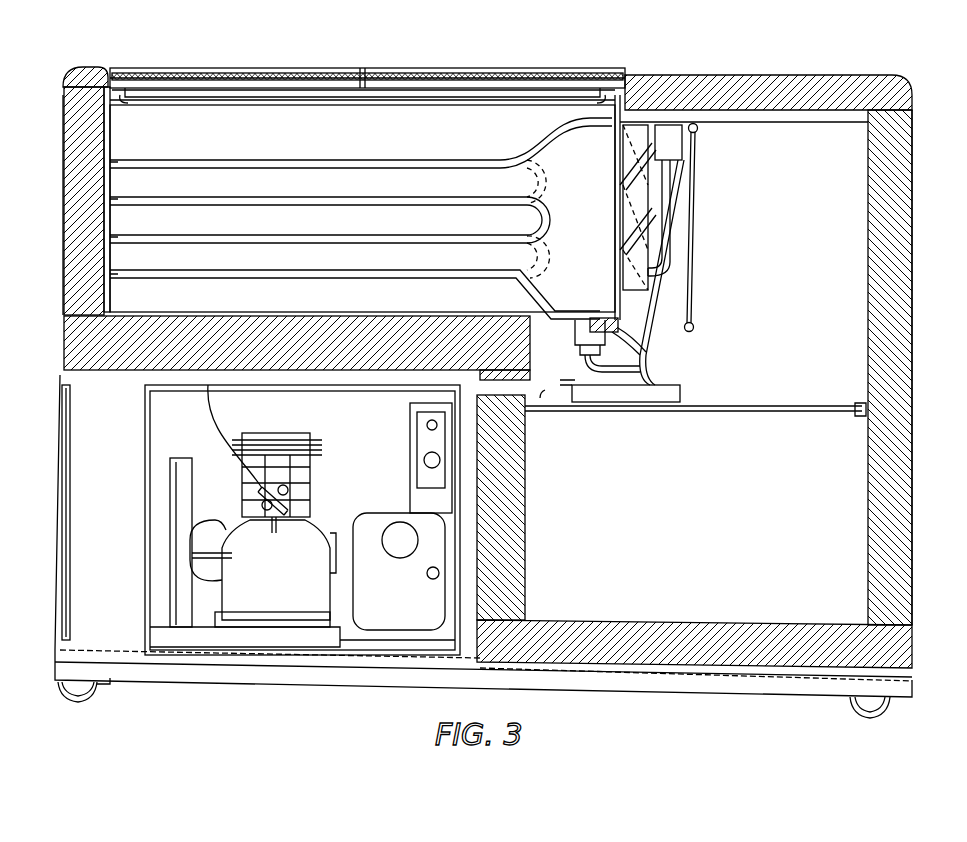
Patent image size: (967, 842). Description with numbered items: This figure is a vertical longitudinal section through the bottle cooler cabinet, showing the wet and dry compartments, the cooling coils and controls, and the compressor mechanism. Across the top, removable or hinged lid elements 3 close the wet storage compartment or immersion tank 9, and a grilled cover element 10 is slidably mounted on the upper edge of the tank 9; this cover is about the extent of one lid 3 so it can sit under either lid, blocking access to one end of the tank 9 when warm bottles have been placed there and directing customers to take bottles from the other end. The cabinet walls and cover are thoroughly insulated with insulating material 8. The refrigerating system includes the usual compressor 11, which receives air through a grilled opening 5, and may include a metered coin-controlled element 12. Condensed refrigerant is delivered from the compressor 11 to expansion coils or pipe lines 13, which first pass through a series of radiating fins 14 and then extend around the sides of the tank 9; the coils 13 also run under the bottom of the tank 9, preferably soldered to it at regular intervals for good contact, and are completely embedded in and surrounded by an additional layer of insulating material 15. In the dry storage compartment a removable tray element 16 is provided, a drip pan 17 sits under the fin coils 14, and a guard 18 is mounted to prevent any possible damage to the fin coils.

The lid elements 3 is at (445, 72).
The grilled opening 5 is at (68, 505).
The insulating material 8 is at (80, 268).
The immersion tank 9 is at (138, 145).
The grilled cover element 10 is at (240, 95).
The compressor 11 is at (305, 548).
The metered coin-controlled element 12 is at (375, 545).
The expansion coils 13 is at (388, 160).
The radiating fins 14 is at (670, 283).
The additional layer of insulating material 15 is at (105, 220).
The removable tray element 16 is at (762, 412).
The drip pan 17 is at (640, 388).
The guard 18 is at (695, 182).